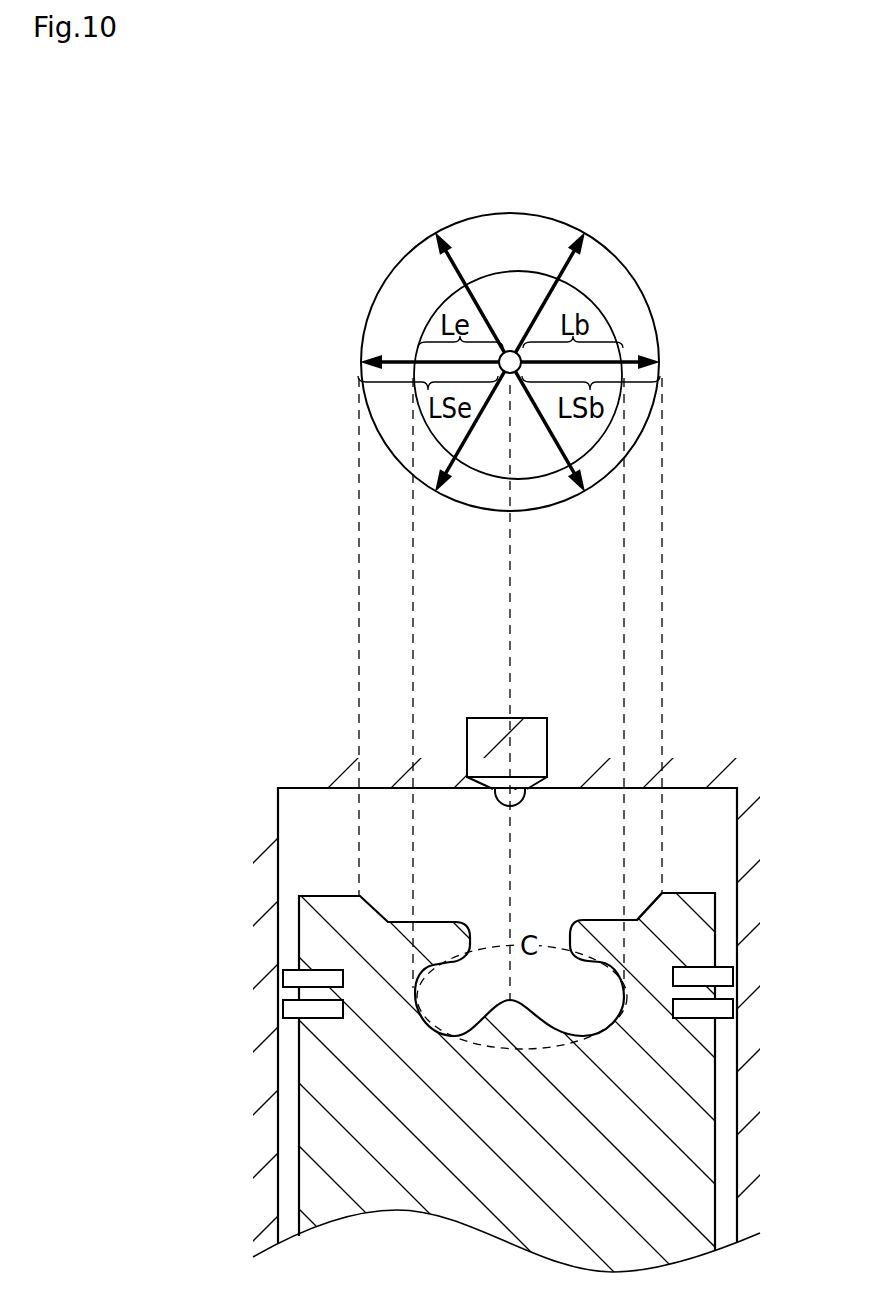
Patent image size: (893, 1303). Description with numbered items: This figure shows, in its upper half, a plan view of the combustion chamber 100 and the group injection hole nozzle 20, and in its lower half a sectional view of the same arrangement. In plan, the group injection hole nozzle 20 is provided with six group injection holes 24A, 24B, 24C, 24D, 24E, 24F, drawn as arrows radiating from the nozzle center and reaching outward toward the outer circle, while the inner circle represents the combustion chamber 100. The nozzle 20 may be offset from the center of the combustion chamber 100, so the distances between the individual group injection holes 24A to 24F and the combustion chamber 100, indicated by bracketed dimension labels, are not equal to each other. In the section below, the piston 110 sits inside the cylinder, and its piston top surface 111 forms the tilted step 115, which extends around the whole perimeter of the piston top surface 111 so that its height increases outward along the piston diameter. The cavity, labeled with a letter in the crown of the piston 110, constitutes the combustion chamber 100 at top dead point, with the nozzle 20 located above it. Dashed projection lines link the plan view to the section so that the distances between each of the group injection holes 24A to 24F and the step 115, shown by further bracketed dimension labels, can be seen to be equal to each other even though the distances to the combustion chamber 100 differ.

The group injection hole nozzle 20 is at (547, 718).
The group injection hole 24A is at (596, 279).
The group injection hole 24B is at (643, 358).
The group injection hole 24C is at (600, 442).
The group injection hole 24D is at (448, 451).
The group injection hole 24E is at (374, 358).
The group injection hole 24F is at (424, 281).
The combustion chamber 100 is at (569, 899).
The piston 110 is at (531, 1108).
The piston top surface 111 is at (688, 878).
The step 115 is at (640, 903).